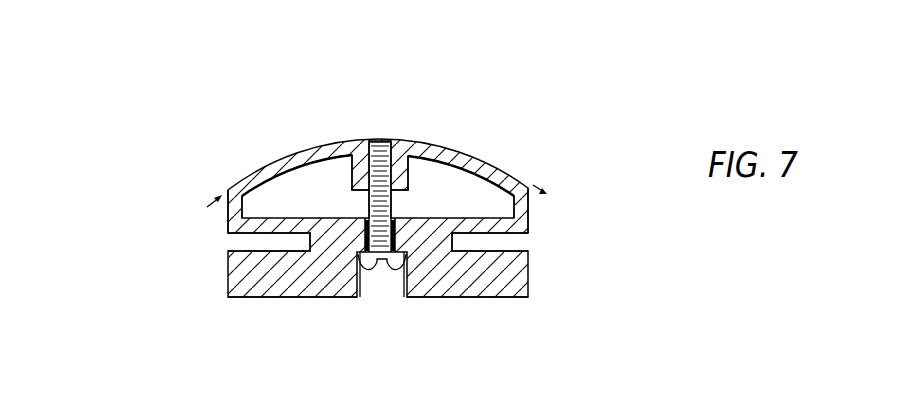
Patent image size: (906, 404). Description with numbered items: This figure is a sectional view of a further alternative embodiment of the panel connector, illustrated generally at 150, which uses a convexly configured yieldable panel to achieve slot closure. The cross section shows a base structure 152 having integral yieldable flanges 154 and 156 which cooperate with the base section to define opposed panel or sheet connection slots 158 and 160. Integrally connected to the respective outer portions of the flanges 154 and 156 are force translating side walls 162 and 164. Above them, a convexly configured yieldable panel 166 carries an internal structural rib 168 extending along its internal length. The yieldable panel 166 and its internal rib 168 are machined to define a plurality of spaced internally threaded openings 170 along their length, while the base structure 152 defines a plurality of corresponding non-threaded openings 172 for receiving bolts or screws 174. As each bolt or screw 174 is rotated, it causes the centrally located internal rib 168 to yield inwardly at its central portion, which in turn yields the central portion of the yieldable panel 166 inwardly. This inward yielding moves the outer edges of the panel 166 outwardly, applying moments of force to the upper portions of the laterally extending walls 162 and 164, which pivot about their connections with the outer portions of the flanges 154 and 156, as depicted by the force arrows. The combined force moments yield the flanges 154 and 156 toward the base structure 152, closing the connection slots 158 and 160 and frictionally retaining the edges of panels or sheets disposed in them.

The alternative embodiment 150 is at (551, 116).
The base structure 152 is at (297, 280).
The yieldable flange 154 is at (276, 222).
The yieldable flange 156 is at (483, 222).
The connection slot 158 is at (234, 242).
The connection slot 160 is at (528, 243).
The force translating side wall 162 is at (228, 211).
The force translating side wall 164 is at (530, 213).
The convexly configured yieldable panel 166 is at (320, 150).
The internal structural rib 168 is at (412, 162).
The internally threaded opening 170 is at (381, 142).
The non-threaded opening 172 is at (388, 262).
The bolt or screw 174 is at (393, 208).